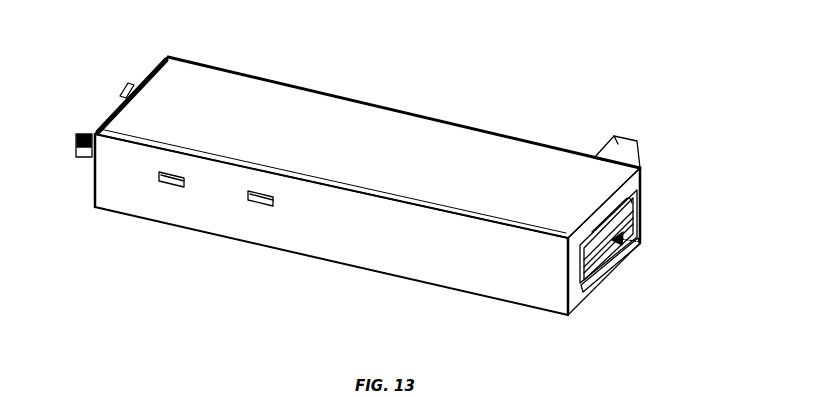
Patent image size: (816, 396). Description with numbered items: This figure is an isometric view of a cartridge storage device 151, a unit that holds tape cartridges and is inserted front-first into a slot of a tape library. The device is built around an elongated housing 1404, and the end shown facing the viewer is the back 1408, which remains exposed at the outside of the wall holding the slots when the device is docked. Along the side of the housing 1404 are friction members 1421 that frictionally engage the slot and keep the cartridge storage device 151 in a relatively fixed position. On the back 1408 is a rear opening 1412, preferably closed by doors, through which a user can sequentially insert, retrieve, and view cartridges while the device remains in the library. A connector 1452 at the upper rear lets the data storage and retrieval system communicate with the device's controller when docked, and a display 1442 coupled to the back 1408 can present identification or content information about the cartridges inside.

The cartridge storage device 151 is at (538, 104).
The housing 1404 is at (291, 117).
The back 1408 is at (640, 167).
The rear opening 1412 is at (643, 242).
The friction members 1421 is at (252, 207).
The display 1442 is at (603, 278).
The connector 1452 is at (630, 137).